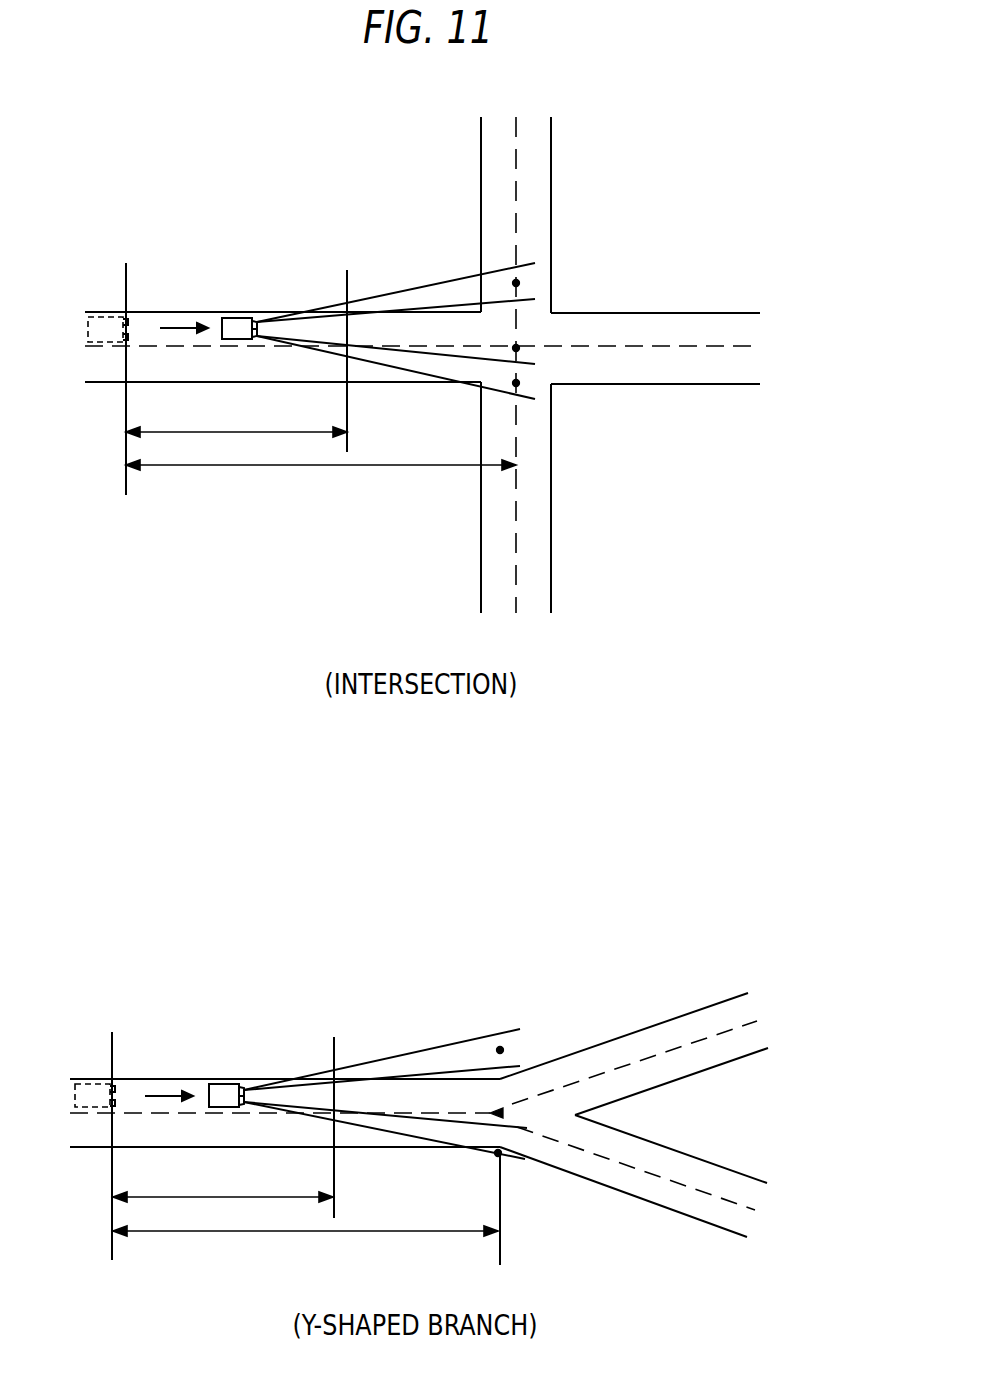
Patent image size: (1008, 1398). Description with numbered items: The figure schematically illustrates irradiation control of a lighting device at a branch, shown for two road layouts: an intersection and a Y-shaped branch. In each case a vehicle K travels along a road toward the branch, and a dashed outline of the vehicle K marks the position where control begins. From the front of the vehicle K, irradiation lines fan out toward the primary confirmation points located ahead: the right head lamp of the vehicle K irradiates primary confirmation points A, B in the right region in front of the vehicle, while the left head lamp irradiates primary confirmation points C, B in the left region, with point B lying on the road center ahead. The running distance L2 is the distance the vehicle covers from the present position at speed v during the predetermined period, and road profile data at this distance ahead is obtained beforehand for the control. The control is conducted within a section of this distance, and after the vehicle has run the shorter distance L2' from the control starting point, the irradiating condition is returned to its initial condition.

The vehicle K is at (107, 325).
The primary confirmation point A is at (516, 383).
The primary confirmation point B is at (516, 348).
The primary confirmation point C is at (516, 283).
The running distance L2 is at (314, 866).
The control section distance L2' is at (230, 800).